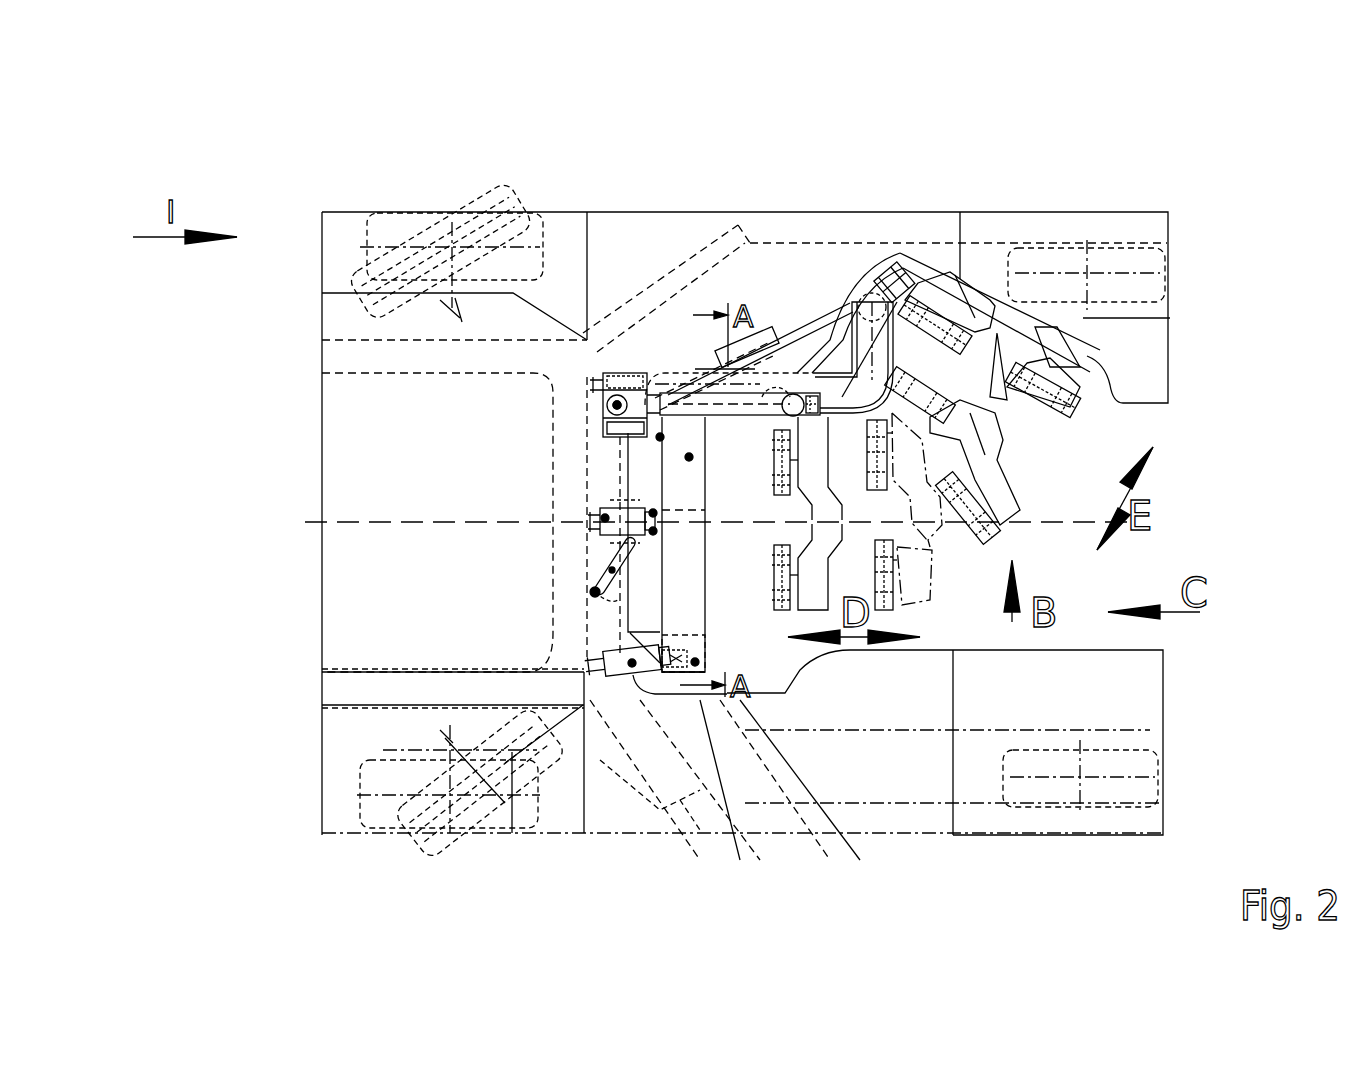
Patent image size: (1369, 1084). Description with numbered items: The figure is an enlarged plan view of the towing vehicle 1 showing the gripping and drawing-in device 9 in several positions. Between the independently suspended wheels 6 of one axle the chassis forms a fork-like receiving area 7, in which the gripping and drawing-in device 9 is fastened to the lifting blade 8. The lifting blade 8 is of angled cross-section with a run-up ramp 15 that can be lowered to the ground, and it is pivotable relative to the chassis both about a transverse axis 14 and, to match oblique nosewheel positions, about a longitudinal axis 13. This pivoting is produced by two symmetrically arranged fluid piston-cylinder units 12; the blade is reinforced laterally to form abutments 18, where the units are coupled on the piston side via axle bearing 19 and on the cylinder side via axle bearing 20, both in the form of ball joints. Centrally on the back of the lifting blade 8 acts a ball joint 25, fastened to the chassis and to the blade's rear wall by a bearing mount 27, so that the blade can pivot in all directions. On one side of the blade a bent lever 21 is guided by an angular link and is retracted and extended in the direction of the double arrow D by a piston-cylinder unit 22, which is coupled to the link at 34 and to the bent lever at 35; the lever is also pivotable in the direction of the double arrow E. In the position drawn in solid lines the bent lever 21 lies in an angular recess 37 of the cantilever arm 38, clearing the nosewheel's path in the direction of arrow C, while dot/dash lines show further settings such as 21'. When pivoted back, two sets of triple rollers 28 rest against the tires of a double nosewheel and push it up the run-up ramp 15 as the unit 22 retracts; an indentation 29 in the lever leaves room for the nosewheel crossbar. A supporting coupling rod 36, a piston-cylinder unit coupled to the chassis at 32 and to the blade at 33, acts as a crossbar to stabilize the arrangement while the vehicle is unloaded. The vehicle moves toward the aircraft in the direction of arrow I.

The towing vehicle 1 is at (389, 195).
The wheels 6 is at (1113, 268).
The fork-like receiving area 7 is at (752, 537).
The lifting blade 8 is at (658, 437).
The gripping and drawing-in device 9 is at (978, 284).
The fluid piston-cylinder units 12 is at (632, 382).
The longitudinal axis 13 is at (366, 522).
The transverse axis 14 is at (612, 617).
The run-up ramp 15 is at (685, 457).
The abutments 18 is at (695, 663).
The axle bearing 19 is at (683, 662).
The axle bearing 20 is at (587, 672).
The bent lever 21 is at (934, 215).
The tool holder 21' is at (1187, 225).
The piston-cylinder unit 22 is at (703, 400).
The ball joint 25 is at (592, 518).
The bearing mount 27 is at (658, 515).
The triple rollers 28 is at (772, 460).
The indentation 29 is at (1030, 325).
The coupling point 32 is at (593, 592).
The coupling point 33 is at (712, 632).
The coupling point 34 is at (603, 400).
The coupling point 35 is at (795, 404).
The supporting coupling rod 36 is at (610, 568).
The angular recess 37 is at (1052, 333).
The cantilever arm 38 is at (756, 274).